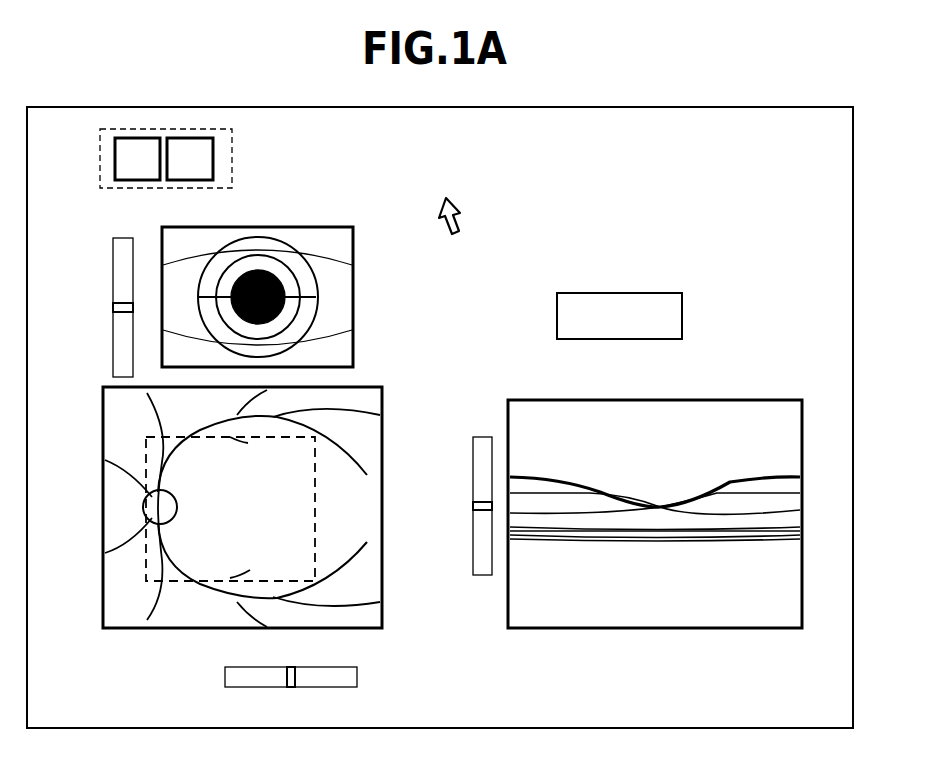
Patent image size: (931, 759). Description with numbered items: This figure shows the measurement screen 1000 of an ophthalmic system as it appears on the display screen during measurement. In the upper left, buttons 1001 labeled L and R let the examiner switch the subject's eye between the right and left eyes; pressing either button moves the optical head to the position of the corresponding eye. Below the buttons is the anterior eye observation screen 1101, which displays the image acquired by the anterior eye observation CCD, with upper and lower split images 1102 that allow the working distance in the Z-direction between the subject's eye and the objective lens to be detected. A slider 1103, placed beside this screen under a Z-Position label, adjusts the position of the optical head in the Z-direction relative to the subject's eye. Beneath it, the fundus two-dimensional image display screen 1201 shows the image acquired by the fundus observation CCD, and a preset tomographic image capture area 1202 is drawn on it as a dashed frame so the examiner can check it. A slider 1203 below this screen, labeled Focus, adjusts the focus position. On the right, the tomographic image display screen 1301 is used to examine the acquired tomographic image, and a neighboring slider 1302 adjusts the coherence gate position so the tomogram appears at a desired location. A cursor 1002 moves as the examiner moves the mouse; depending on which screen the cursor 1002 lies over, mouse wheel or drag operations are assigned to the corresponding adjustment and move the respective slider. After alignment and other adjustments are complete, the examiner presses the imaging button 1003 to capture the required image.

The measurement screen 1000 is at (674, 107).
The buttons 1001 is at (138, 138).
The cursor 1002 is at (451, 197).
The imaging button 1003 is at (621, 293).
The anterior eye observation screen 1101 is at (266, 227).
The split images 1102 is at (310, 265).
The slider 1103 is at (113, 318).
The fundus two-dimensional image display screen 1201 is at (145, 630).
The tomographic image capture area 1202 is at (146, 562).
The slider 1203 is at (357, 672).
The tomographic image display screen 1301 is at (730, 400).
The slider 1302 is at (480, 576).